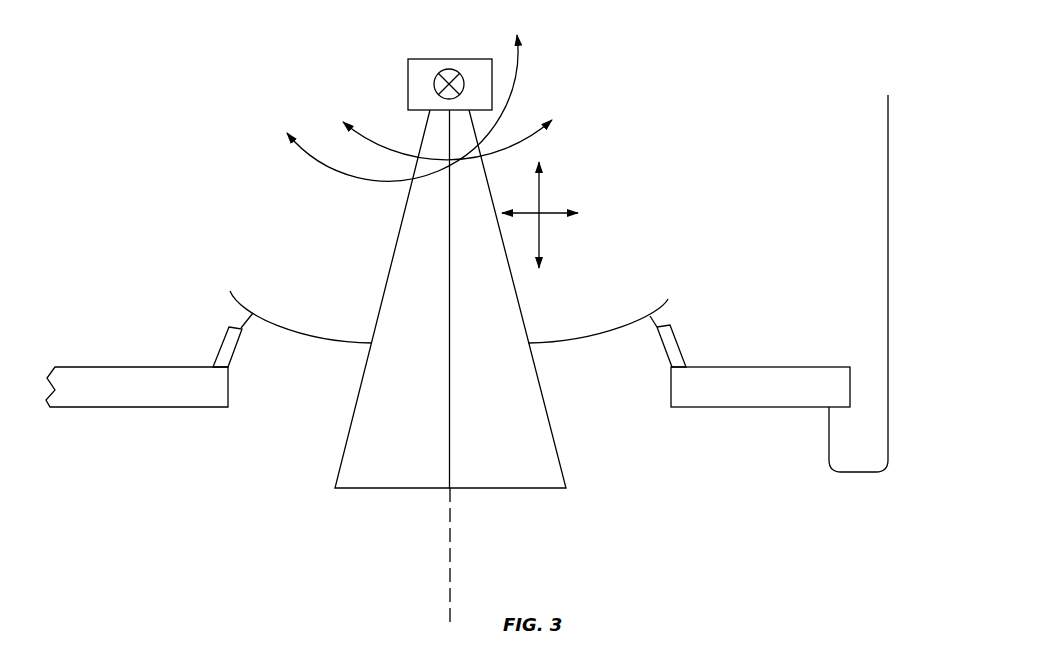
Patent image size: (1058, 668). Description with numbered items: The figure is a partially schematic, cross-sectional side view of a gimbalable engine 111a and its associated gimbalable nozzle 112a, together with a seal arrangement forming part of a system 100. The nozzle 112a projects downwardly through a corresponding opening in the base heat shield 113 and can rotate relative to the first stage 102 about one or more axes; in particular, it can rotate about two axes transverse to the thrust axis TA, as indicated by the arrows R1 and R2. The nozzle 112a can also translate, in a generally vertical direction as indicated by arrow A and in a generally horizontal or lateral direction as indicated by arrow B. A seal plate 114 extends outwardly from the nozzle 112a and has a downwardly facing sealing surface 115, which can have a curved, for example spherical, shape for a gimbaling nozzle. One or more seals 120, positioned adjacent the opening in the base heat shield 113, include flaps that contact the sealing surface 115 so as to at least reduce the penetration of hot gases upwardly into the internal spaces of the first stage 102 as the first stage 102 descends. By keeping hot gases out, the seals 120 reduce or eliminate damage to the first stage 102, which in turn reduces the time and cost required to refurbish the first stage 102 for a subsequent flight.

The system 100 is at (225, 170).
The first stage 102 is at (888, 210).
The gimbalable engine 111a is at (608, 172).
The gimbalable nozzle 112a is at (400, 234).
The base heat shield 113 is at (113, 402).
The seal plate 114 is at (678, 285).
The sealing surface 115 is at (313, 337).
The seals 120 is at (252, 350).
The arrow indicating generally vertical translation A is at (540, 246).
The arrow indicating generally horizontal translation B is at (550, 212).
The first rotation arrow R1 is at (510, 72).
The second rotation arrow R2 is at (363, 135).
The thrust axis TA is at (450, 583).